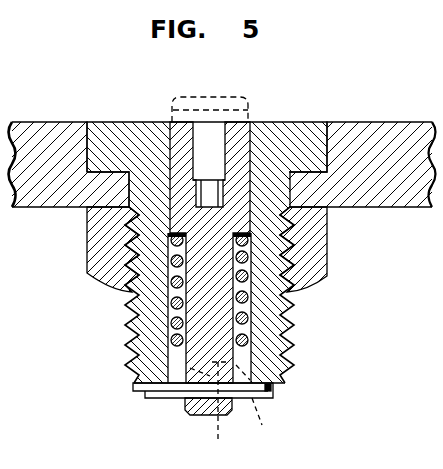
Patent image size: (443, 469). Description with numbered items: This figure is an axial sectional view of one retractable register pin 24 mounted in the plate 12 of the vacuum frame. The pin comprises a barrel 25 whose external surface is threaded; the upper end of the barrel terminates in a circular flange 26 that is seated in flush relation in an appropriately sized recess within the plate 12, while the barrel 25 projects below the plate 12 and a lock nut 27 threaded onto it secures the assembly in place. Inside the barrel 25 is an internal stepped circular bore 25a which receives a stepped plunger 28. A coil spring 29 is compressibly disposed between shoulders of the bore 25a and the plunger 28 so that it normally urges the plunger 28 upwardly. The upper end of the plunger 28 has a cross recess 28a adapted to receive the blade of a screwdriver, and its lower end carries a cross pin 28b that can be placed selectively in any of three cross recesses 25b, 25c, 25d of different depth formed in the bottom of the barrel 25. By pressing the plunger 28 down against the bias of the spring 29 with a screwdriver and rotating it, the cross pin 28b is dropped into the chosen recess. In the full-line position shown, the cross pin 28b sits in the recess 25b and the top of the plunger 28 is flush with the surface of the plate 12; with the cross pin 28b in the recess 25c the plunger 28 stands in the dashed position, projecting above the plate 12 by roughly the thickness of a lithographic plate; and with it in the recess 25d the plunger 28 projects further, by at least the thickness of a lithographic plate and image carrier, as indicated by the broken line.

The plate 12 is at (371, 123).
The retractable pin 24 is at (287, 122).
The barrel 25 is at (127, 331).
The stepped circular bore 25a is at (168, 322).
The first cross recess 25b is at (271, 389).
The second cross recess 25c is at (213, 415).
The third cross recess 25d is at (267, 409).
The circular flange 26 is at (100, 132).
The lock nut 27 is at (87, 273).
The stepped plunger 28 is at (238, 150).
The cross recess 28a is at (203, 147).
The cross pin 28b is at (167, 398).
The coil spring 29 is at (186, 316).